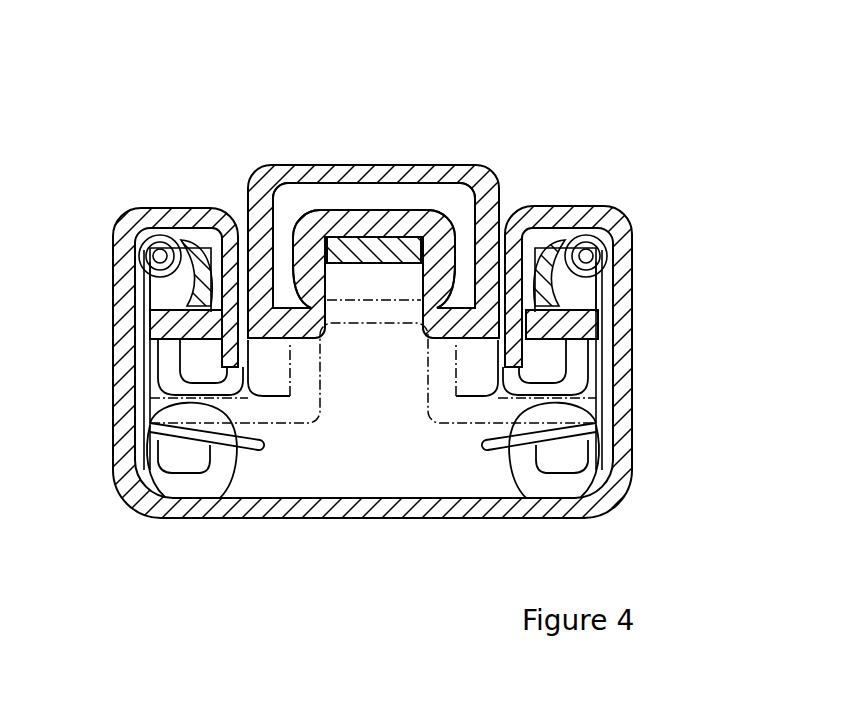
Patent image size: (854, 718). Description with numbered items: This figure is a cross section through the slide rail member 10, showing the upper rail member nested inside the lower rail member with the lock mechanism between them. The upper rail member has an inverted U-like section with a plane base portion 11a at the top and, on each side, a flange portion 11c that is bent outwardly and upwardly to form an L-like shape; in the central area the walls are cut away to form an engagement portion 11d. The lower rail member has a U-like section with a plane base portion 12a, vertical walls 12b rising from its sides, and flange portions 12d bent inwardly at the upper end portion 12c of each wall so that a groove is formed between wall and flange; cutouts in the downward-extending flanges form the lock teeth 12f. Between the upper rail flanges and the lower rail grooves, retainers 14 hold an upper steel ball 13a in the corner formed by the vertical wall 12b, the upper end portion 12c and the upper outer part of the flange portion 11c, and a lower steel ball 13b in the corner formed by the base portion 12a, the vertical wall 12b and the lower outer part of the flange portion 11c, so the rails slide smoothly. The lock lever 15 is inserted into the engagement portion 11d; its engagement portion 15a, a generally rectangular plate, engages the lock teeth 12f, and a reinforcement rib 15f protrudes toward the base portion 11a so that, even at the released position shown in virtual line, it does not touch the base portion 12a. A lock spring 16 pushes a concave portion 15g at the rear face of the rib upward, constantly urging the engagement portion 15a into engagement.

The slide rail member 10 is at (513, 101).
The plane base portion 11a is at (370, 176).
The flange portion 11c is at (578, 365).
The engagement portion 11d is at (245, 408).
The plane base portion 12a is at (362, 500).
The vertical wall 12b is at (126, 375).
The upper end portion 12c is at (178, 214).
The flange portion 12d is at (232, 295).
The lock teeth 12f is at (230, 345).
The upper steel ball 13a is at (154, 258).
The lower steel ball 13b is at (150, 452).
The retainer 14 is at (146, 413).
The lock lever 15 is at (374, 226).
The engagement portion 15a is at (151, 333).
The reinforcement rib 15f is at (350, 222).
The concave portion 15g is at (372, 266).
The lock spring 16 is at (412, 246).